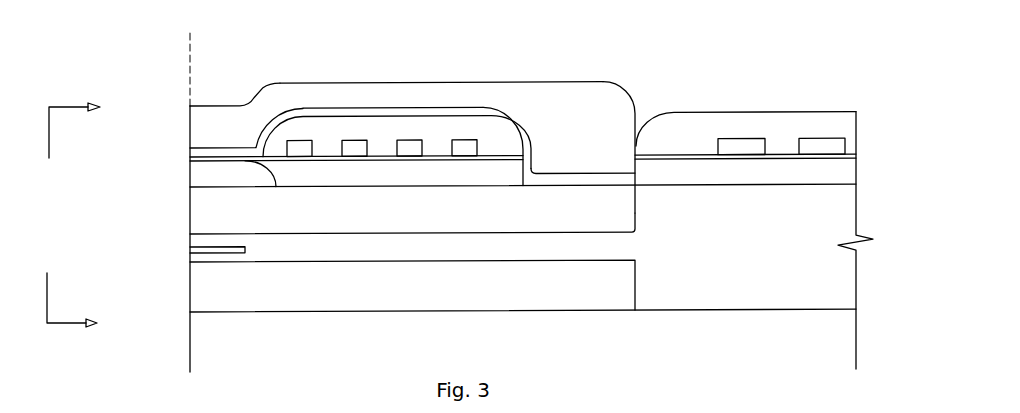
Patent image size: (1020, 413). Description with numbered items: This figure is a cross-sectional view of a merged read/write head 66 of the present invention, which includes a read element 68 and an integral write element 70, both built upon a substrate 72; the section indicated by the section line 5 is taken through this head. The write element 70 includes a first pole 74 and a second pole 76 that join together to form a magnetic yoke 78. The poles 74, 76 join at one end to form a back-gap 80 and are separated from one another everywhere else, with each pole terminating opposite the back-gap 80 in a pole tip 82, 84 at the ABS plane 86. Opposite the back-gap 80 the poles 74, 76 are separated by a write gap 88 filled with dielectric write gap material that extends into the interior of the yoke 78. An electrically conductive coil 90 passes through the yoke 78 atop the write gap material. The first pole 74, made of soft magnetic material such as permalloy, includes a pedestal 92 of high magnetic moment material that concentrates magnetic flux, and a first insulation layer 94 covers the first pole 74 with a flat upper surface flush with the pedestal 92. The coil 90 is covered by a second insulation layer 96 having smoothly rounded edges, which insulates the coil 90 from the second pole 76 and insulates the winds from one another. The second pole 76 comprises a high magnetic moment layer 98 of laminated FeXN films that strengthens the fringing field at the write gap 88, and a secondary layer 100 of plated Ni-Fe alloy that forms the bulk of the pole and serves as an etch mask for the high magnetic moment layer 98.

The section line 5- 5 is at (73, 216).
The merged read/write head 66 is at (138, 336).
The read element 68 is at (180, 187).
The write element 70 is at (160, 106).
The substrate 72 is at (573, 347).
The first pole 74 is at (573, 221).
The second pole 76 is at (320, 104).
The magnetic yoke 78 is at (509, 84).
The back-gap 80 is at (595, 108).
The pole tip 82 is at (188, 225).
The pole tip 84 is at (201, 106).
The ABS plane 86 is at (191, 159).
The write gap 88 is at (233, 153).
The electrically conductive coil 90 is at (298, 141).
The pedestal 92 is at (205, 184).
The first insulation layer 94 is at (425, 182).
The second insulation layer 96 is at (320, 137).
The high magnetic moment layer 98 is at (432, 110).
The secondary layer 100 is at (571, 156).